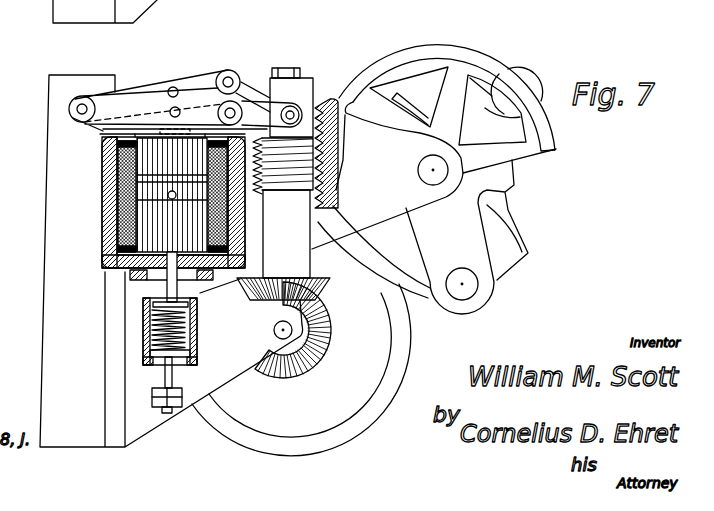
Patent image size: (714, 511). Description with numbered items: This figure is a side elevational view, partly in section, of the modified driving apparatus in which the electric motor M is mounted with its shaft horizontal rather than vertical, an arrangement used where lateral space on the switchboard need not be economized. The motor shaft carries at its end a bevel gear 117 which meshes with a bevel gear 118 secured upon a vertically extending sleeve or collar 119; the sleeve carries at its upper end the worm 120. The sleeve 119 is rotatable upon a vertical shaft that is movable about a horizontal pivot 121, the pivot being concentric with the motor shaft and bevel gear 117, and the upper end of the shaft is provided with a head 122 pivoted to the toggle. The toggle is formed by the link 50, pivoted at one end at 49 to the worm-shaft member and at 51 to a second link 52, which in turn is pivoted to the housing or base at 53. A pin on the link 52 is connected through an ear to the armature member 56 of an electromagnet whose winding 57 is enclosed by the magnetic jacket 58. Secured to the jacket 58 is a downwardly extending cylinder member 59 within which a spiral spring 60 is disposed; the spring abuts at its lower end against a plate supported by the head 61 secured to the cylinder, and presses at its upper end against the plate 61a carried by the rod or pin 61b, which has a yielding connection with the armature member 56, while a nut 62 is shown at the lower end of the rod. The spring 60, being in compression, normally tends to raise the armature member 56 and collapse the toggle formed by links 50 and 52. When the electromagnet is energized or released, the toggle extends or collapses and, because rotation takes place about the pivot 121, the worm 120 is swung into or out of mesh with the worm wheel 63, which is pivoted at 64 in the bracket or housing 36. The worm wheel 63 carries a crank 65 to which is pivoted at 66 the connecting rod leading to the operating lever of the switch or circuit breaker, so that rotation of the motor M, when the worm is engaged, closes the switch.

The pivot 53 is at (82, 96).
The link 52 is at (144, 100).
The pivot 51 is at (240, 100).
The link 50 is at (262, 108).
The head 122 is at (313, 95).
The pivot 49 is at (300, 120).
The armature member 56 is at (113, 141).
The winding 57 is at (118, 190).
The magnetic jacket 58 is at (100, 228).
The rod or pin 61b is at (167, 287).
The plate 61a is at (157, 303).
The cylinder member 59 is at (197, 325).
The spiral spring 60 is at (193, 357).
The head 61 is at (153, 365).
The nut 62 is at (167, 380).
The worm 120 is at (288, 180).
The sleeve or collar 119 is at (297, 258).
The bevel gear 118 is at (328, 290).
The bevel gear 117 is at (302, 375).
The horizontal pivot 121 is at (292, 332).
The electric motor M is at (315, 418).
The worm wheel 63 is at (462, 53).
The bracket or housing 36 is at (434, 174).
The pivot 64 is at (428, 165).
The crank 65 is at (455, 240).
The pivot 66 is at (470, 285).